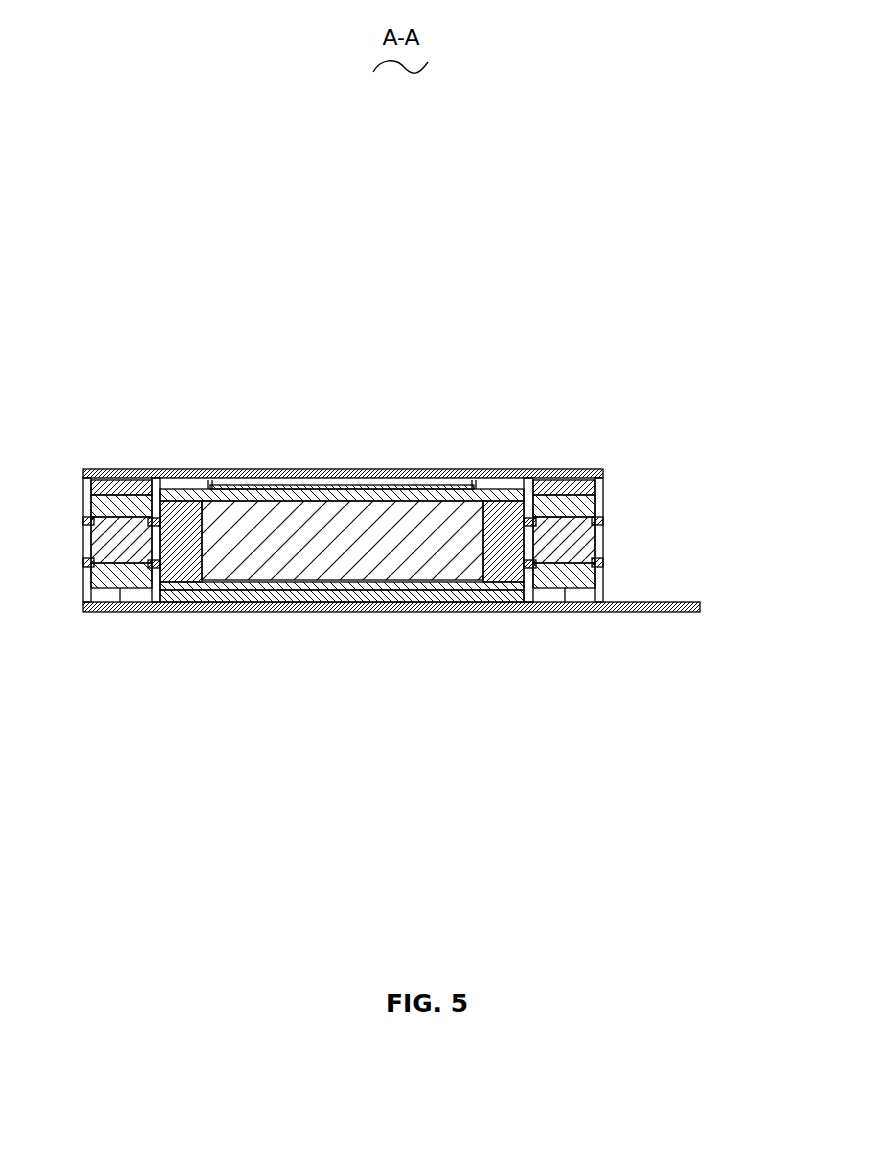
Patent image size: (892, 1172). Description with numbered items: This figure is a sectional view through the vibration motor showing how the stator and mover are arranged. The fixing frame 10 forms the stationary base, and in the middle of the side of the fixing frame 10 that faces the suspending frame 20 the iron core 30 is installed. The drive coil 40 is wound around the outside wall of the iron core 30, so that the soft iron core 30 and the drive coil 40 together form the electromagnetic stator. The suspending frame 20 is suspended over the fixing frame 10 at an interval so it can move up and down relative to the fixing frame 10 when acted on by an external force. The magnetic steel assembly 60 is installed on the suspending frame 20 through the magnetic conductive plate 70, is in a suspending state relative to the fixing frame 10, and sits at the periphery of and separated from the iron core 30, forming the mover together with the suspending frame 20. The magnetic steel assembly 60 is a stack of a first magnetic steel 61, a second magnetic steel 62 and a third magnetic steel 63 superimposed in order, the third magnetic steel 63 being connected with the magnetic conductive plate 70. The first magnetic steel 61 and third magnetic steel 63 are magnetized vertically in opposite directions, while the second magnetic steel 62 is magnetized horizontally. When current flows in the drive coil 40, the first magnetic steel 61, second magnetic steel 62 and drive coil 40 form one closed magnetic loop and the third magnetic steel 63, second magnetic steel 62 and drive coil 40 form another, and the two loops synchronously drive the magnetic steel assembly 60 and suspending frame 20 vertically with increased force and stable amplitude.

The fixing frame 10 is at (328, 612).
The suspending frame 20 is at (283, 469).
The iron core 30 is at (380, 512).
The drive coil 40 is at (499, 503).
The magnetic steel assembly 60 is at (441, 524).
The first magnetic steel 61 is at (603, 575).
The second magnetic steel 62 is at (603, 543).
The third magnetic steel 63 is at (603, 502).
The magnetic conductive plate 70 is at (603, 470).